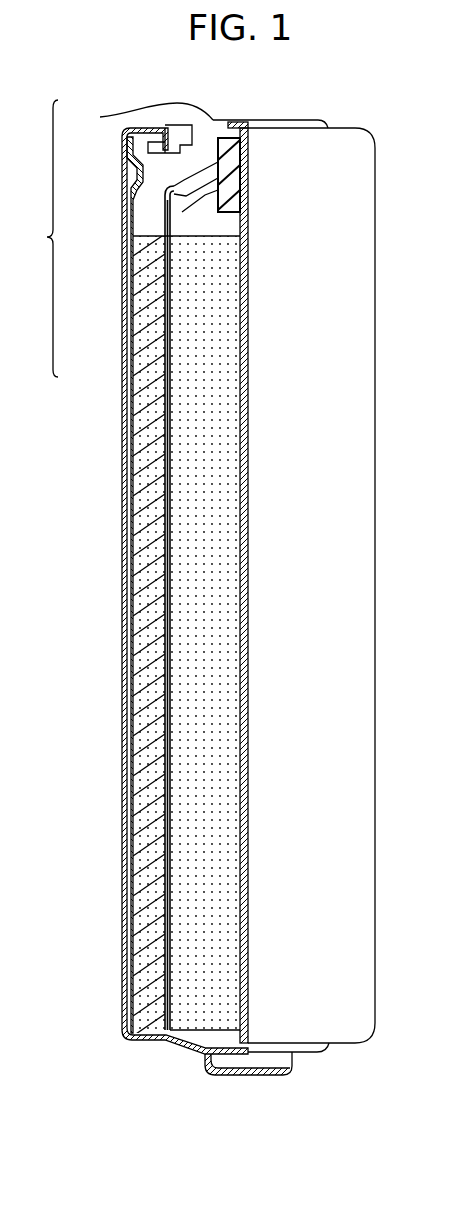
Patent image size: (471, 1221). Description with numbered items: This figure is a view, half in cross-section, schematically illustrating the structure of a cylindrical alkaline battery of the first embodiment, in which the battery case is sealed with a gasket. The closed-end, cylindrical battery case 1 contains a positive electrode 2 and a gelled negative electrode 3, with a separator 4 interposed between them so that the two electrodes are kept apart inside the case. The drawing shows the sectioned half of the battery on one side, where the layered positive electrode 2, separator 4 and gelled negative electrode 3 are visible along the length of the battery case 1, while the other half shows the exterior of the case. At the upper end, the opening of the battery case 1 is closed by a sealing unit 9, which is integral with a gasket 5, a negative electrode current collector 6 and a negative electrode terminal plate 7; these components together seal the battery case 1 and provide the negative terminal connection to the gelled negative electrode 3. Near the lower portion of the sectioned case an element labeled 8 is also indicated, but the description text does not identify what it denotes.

The battery case 1 is at (123, 623).
The positive electrode 2 is at (143, 902).
The gelled negative electrode 3 is at (180, 505).
The separator 4 is at (167, 706).
The gasket 5 is at (165, 236).
The negative electrode current collector 6 is at (243, 330).
The negative electrode terminal plate 7 is at (100, 117).
The insulator 8 is at (122, 977).
The sealing unit 9 is at (40, 238).